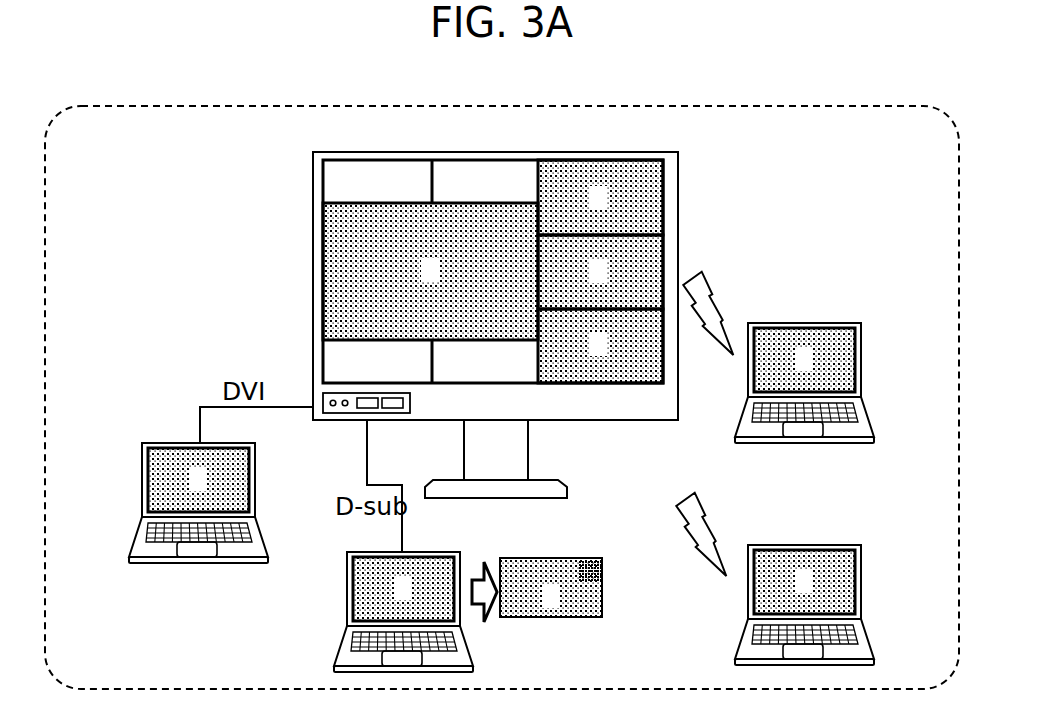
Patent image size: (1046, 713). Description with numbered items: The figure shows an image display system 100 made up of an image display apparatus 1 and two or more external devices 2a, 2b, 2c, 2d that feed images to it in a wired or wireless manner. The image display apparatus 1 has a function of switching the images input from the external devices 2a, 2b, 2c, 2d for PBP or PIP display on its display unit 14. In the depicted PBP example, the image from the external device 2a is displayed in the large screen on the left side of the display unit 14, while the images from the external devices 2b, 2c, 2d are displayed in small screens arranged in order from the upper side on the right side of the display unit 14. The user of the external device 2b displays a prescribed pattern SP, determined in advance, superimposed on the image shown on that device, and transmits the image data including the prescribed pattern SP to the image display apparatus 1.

The image display system 100 is at (882, 107).
The image display apparatus 1 is at (514, 306).
The display unit 14 is at (665, 190).
The external device 2a is at (255, 475).
The external device 2b is at (428, 552).
The external device 2c is at (862, 358).
The external device 2d is at (862, 578).
The prescribed pattern SP is at (583, 560).